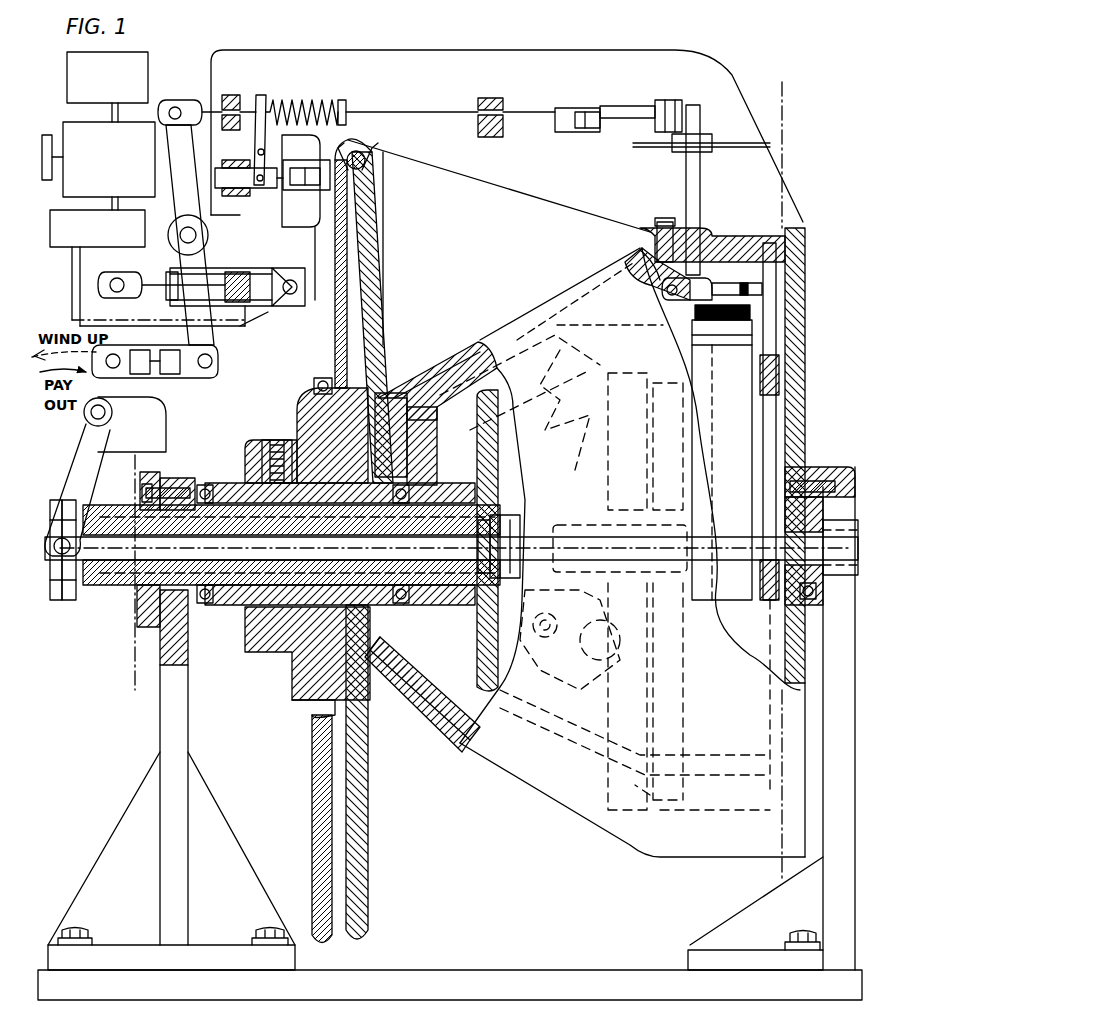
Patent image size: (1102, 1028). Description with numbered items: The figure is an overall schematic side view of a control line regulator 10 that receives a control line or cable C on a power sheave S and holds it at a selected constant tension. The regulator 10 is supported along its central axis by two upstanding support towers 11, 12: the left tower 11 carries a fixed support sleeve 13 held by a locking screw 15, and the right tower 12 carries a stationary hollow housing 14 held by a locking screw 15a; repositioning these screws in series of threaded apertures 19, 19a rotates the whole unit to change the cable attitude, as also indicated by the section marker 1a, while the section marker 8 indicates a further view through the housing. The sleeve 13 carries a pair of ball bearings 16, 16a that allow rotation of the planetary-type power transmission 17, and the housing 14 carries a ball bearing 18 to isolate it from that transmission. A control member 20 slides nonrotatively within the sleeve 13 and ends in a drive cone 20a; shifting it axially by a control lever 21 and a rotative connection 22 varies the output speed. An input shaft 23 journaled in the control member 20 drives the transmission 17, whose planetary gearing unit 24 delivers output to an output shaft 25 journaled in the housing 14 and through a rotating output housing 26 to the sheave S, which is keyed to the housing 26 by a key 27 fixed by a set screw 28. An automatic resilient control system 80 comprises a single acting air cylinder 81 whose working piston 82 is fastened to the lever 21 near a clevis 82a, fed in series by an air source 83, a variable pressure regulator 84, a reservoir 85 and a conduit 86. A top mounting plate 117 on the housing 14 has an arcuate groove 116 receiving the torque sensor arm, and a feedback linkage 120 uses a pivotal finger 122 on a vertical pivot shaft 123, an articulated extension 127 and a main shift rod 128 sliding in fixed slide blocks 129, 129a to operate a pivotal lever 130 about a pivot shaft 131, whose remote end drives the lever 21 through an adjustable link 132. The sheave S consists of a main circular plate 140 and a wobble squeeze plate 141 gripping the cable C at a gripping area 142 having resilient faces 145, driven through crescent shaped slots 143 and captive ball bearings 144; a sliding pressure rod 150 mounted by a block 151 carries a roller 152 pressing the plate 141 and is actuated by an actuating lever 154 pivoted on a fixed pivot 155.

The control line regulator 10 is at (790, 60).
The upstanding support tower 11 is at (182, 725).
The upstanding support tower 12 is at (846, 694).
The fixed support sleeve 13 is at (138, 618).
The stationary hollow housing 14 is at (806, 352).
The locking screw 15 is at (142, 494).
The locking screw 15a is at (852, 468).
The ball bearing 16 is at (412, 482).
The ball bearing 16a is at (208, 505).
The planetary-type power transmission 17 is at (672, 800).
The ball bearing 18 is at (396, 390).
The threaded apertures 19 is at (183, 484).
The threaded apertures 19a is at (816, 472).
The control member 20 is at (88, 598).
The drive cone 20a is at (420, 676).
The control lever 21 is at (90, 474).
The rotative connection 22 is at (56, 500).
The input shaft 23 is at (120, 562).
The planetary gearing unit 24 is at (600, 735).
The output shaft 25 is at (810, 596).
The rotating output housing 26 is at (740, 314).
The key 27 is at (252, 458).
The set screw 28 is at (264, 440).
The automatic resilient control system 80 is at (270, 310).
The air cylinder 81 is at (176, 298).
The working piston 82 is at (240, 283).
The clevis 82a is at (158, 284).
The air source 83 is at (140, 66).
The variable pressure regulator 84 is at (72, 128).
The reservoir 85 is at (70, 250).
The conduit 86 is at (262, 325).
The arcuate groove 116 is at (745, 230).
The top mounting plate 117 is at (676, 228).
The feedback linkage 120 is at (560, 75).
The pivotal finger 122 is at (708, 296).
The vertical pivot shaft 123 is at (701, 196).
The articulated extension 127 is at (637, 106).
The main shift rod 128 is at (518, 122).
The fixed slide block 129 is at (228, 93).
The fixed slide block 129a is at (492, 100).
The pivotal lever 130 is at (184, 140).
The pivot shaft 131 is at (198, 236).
The adjustable link 132 is at (168, 372).
The main circular plate 140 is at (373, 268).
The wobble squeeze plate 141 is at (340, 348).
The gripping area 142 is at (350, 138).
The crescent shaped slots 143 is at (306, 410).
The captive ball bearings 144 is at (316, 385).
The resilient faces 145 is at (374, 168).
The sliding pressure rod 150 is at (240, 196).
The block 151 is at (282, 192).
The roller 152 is at (306, 170).
The actuating lever 154 is at (266, 100).
The fixed pivot 155 is at (257, 152).
The section line 1a is at (150, 449).
The section line 8 is at (782, 82).
The control line or cable C is at (372, 133).
The power sheave S is at (392, 306).